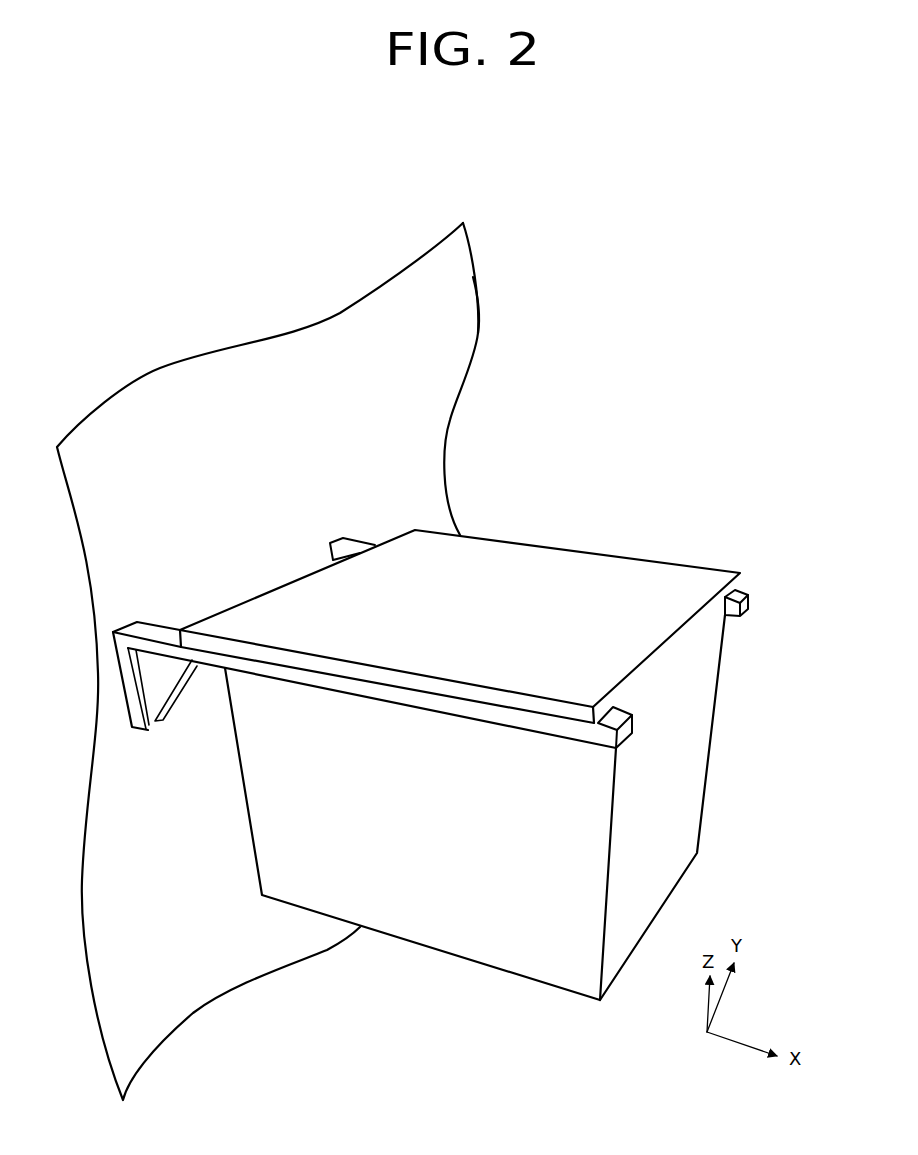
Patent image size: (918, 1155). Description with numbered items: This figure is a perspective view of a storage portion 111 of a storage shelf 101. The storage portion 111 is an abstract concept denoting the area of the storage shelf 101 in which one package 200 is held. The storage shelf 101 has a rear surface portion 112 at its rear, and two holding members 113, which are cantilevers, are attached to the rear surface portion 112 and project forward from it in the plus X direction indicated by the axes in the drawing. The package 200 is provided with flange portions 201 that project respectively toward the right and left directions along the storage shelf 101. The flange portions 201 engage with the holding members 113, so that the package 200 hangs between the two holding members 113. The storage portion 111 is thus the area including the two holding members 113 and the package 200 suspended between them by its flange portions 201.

The storage shelf 101 is at (437, 245).
The storage portion 111 is at (712, 420).
The rear surface portion 112 is at (440, 318).
The holding member 113 is at (748, 605).
The package 200 is at (557, 573).
The flange portion 201 is at (687, 570).